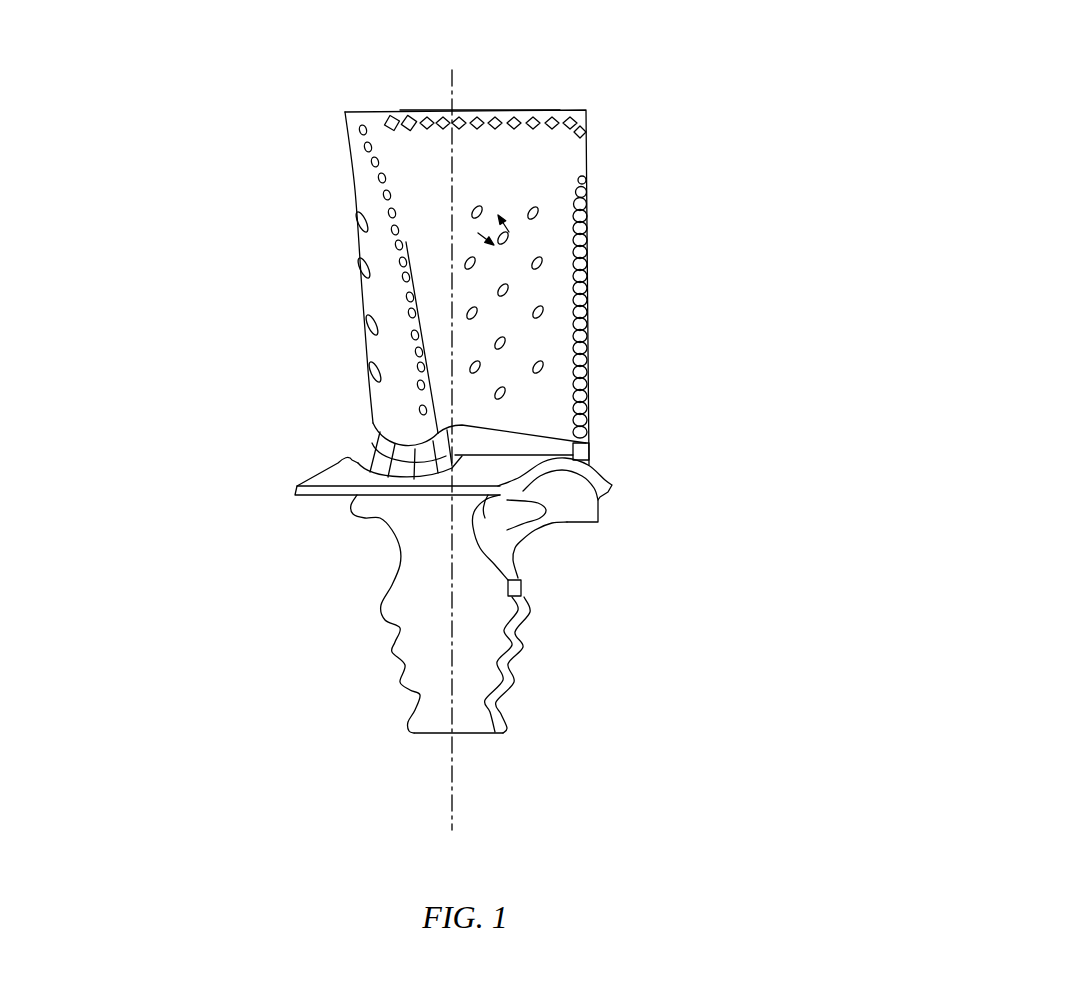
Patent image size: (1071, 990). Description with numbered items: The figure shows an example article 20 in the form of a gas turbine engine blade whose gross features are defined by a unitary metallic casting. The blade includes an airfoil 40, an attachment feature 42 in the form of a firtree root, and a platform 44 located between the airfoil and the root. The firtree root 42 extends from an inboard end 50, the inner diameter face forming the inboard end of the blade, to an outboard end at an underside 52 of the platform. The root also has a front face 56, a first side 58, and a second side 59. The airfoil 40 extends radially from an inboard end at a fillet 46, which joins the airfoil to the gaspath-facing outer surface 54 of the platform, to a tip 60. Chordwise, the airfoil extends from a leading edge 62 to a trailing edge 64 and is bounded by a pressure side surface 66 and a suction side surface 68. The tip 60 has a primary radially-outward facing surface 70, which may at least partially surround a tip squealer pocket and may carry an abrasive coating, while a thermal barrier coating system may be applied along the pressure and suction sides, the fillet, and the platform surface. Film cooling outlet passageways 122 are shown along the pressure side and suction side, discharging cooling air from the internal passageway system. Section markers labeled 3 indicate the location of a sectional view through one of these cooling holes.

The article 20 is at (645, 122).
The airfoil 40 is at (338, 256).
The attachment feature 42 is at (538, 685).
The platform 44 is at (326, 466).
The fillet 46 is at (524, 446).
The inboard end 50 is at (487, 733).
The underside 52 is at (570, 492).
The outer surface 54 is at (350, 470).
The front face 56 is at (487, 603).
The first side 58 is at (523, 657).
The second side 59 is at (390, 635).
The tip 60 is at (478, 100).
The leading edge 62 is at (415, 290).
The trailing edge 64 is at (590, 293).
The pressure side surface 66 is at (520, 225).
The suction side surface 68 is at (365, 212).
The primary radially-outward facing surface 70 is at (498, 108).
The film cooling outlet passageways 122 is at (365, 370).
The section line of FIG. 3 is at (487, 221).